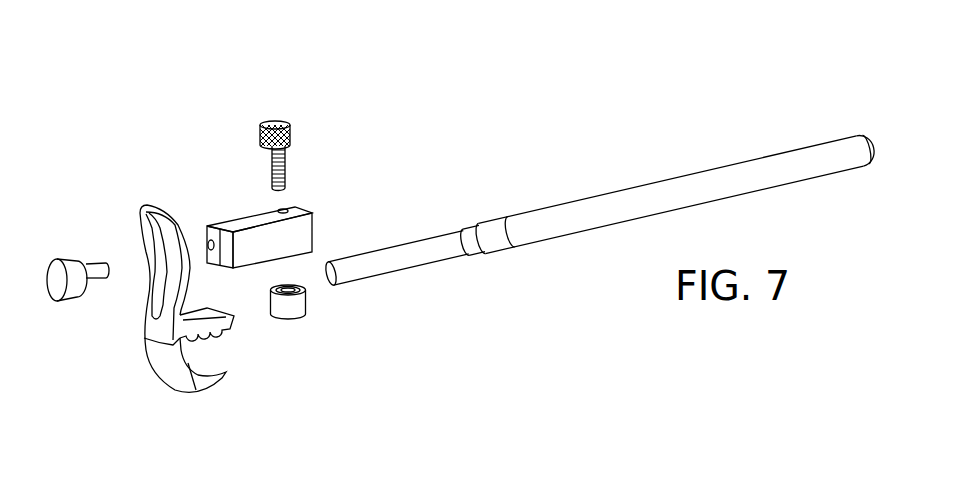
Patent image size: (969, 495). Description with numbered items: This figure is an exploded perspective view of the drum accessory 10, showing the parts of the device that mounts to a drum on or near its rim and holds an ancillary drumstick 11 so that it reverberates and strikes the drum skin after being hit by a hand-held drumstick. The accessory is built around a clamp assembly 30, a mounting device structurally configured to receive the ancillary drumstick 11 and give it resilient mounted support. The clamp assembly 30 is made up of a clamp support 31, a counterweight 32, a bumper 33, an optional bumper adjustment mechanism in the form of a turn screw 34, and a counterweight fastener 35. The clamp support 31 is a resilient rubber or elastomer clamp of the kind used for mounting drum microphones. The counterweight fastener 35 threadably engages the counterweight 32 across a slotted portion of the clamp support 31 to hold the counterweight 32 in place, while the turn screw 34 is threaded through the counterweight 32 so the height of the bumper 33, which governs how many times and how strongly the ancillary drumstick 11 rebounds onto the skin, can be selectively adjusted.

The drum accessory 10 is at (508, 93).
The ancillary drumstick 11 is at (597, 193).
The clamp assembly 30 is at (242, 260).
The clamp support 31 is at (145, 203).
The counterweight 32 is at (307, 230).
The bumper 33 is at (293, 305).
The turn screw 34 is at (283, 120).
The counterweight fastener 35 is at (67, 258).